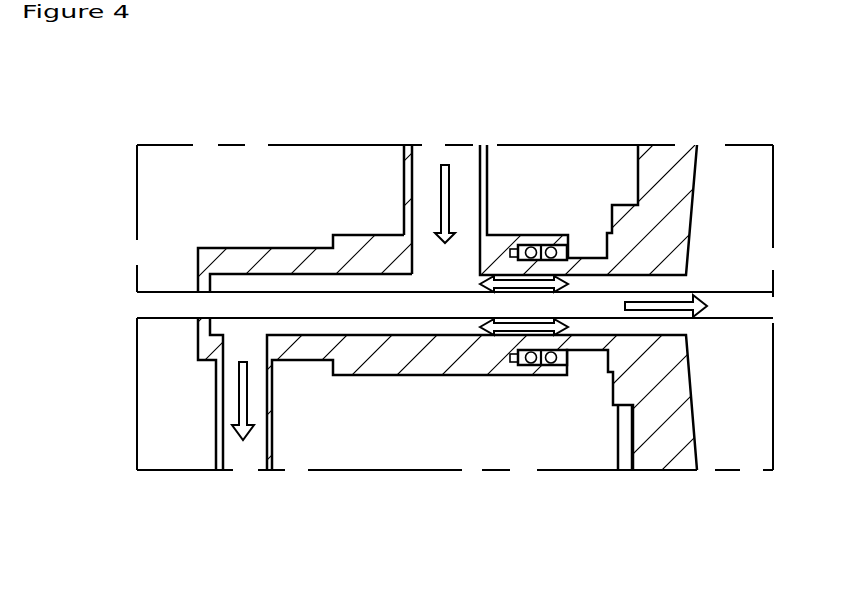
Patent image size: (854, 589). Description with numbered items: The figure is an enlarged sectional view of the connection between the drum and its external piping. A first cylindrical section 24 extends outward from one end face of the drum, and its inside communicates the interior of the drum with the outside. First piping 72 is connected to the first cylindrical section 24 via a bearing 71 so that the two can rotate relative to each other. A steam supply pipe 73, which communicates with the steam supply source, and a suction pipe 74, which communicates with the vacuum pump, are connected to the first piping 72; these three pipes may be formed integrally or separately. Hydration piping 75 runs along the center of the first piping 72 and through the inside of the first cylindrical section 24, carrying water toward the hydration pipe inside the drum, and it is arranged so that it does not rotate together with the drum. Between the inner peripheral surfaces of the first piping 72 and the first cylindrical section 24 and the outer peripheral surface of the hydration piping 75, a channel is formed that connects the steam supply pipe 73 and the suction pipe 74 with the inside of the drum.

The first cylindrical section 24 is at (573, 267).
The bearing 71 is at (540, 263).
The first piping 72 is at (250, 258).
The steam supply pipe 73 is at (407, 182).
The suction pipe 74 is at (216, 418).
The hydration piping 75 is at (180, 307).